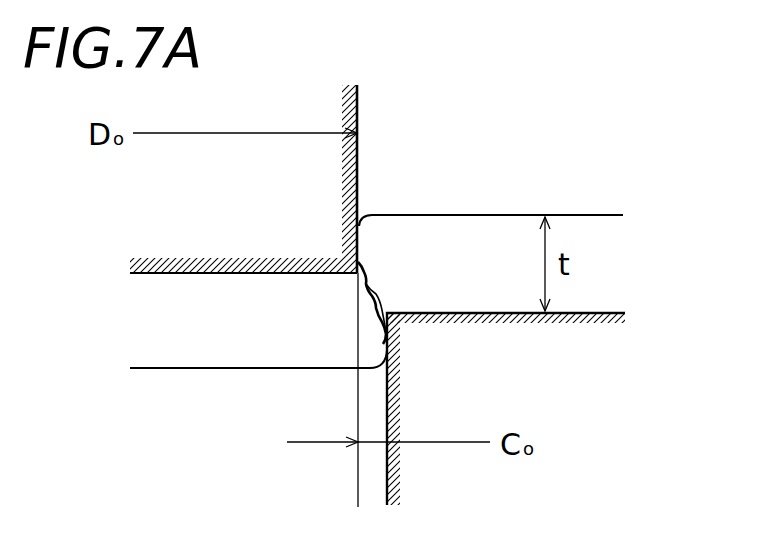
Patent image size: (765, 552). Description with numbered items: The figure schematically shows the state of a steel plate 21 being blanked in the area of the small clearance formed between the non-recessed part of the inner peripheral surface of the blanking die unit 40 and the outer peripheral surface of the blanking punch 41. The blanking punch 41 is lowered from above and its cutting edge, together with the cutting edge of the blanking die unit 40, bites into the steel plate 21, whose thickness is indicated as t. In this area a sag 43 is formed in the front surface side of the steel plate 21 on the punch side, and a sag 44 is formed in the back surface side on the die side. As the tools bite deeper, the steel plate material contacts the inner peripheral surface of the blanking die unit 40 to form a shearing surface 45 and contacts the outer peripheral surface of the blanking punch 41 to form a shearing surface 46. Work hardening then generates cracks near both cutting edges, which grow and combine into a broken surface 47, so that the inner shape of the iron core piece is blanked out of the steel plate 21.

The steel plate 21 is at (505, 212).
The blanking die unit 40 is at (605, 345).
The blanking punch 41 is at (253, 110).
The sag 43 is at (360, 216).
The sag 44 is at (392, 370).
The shearing surface 45 is at (398, 345).
The shearing surface 46 is at (348, 239).
The broken surface 47 is at (385, 283).